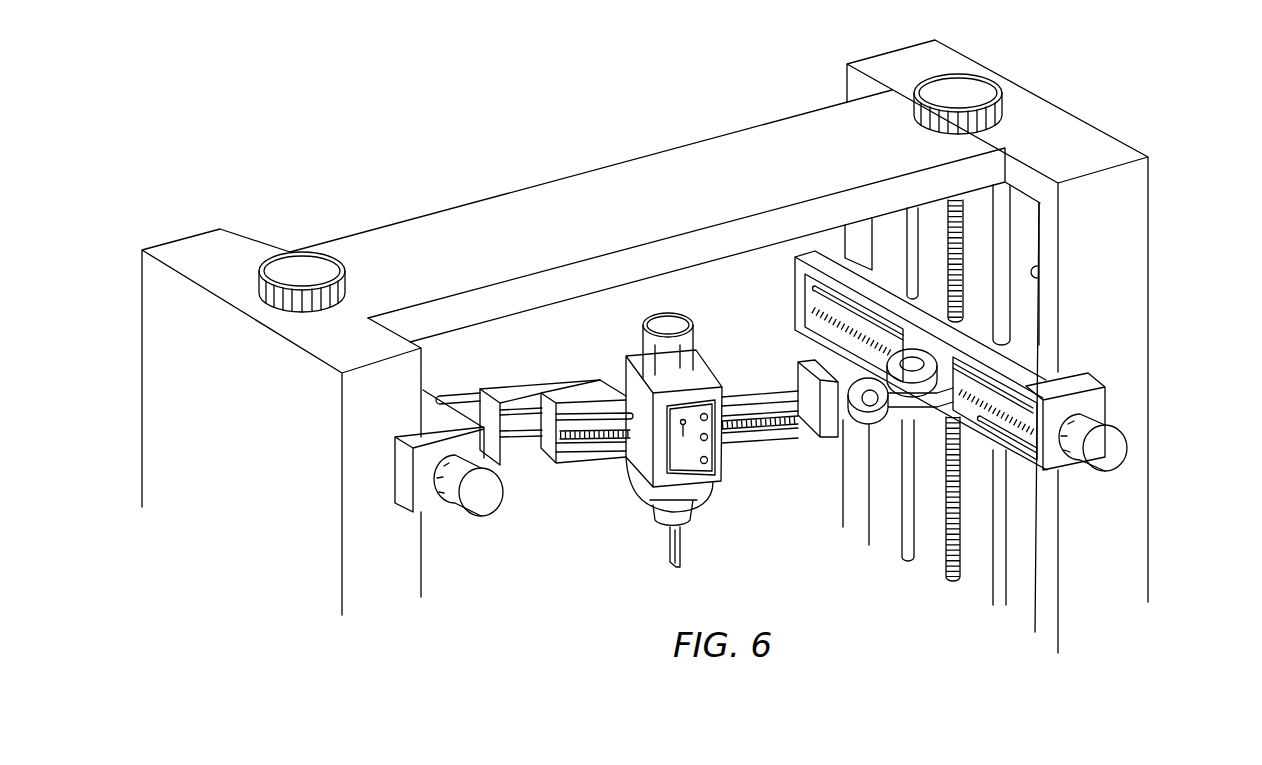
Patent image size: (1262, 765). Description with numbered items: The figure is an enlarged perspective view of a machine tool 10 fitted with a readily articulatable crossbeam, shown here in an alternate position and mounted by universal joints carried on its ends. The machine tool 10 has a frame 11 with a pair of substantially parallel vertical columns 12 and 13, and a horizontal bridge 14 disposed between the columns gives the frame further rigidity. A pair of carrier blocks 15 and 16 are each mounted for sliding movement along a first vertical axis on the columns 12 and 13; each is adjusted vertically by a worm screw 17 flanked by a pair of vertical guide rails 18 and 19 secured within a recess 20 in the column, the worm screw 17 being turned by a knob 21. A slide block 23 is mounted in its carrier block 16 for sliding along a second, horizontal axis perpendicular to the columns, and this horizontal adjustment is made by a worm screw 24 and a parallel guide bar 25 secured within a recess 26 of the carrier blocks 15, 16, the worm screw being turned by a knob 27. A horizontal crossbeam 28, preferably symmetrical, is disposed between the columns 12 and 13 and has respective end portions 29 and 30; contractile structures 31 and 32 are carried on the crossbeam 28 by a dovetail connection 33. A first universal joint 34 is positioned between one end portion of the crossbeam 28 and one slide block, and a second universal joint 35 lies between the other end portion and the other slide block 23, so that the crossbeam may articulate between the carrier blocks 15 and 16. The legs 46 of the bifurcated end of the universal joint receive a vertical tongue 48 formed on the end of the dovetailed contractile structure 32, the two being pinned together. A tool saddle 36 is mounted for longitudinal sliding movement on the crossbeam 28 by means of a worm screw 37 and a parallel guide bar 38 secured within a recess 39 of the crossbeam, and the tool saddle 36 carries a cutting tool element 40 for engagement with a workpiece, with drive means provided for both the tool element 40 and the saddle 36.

The machine tool 10 is at (437, 150).
The frame 11 is at (195, 242).
The vertical column 12 is at (407, 568).
The vertical column 13 is at (1118, 353).
The horizontal bridge 14 is at (588, 190).
The carrier block 15 is at (423, 497).
The carrier block 16 is at (1097, 395).
The worm screw 17 is at (967, 240).
The vertical guide rail 18 is at (795, 268).
The vertical guide rail 19 is at (1002, 297).
The recess 20 is at (913, 260).
The knob 21 is at (291, 264).
The slide block 23 is at (1043, 345).
The worm screw 24 is at (1010, 435).
The guide bar 25 is at (1027, 437).
The recess 26 is at (1035, 440).
The knob 27 is at (488, 493).
The horizontal crossbeam 28 is at (580, 444).
The end portion 29 is at (582, 398).
The end portion 30 is at (850, 358).
The contractile structure 31 is at (492, 388).
The contractile structure 32 is at (760, 405).
The dovetail connection 33 is at (535, 432).
The first universal joint 34 is at (884, 434).
The second universal joint 35 is at (466, 379).
The tool saddle 36 is at (656, 502).
The worm screw 37 is at (573, 453).
The guide bar 38 is at (733, 425).
The recess 39 is at (782, 432).
The cutting tool element 40 is at (680, 543).
The legs 46 is at (487, 433).
The vertical tongue 48 is at (465, 405).